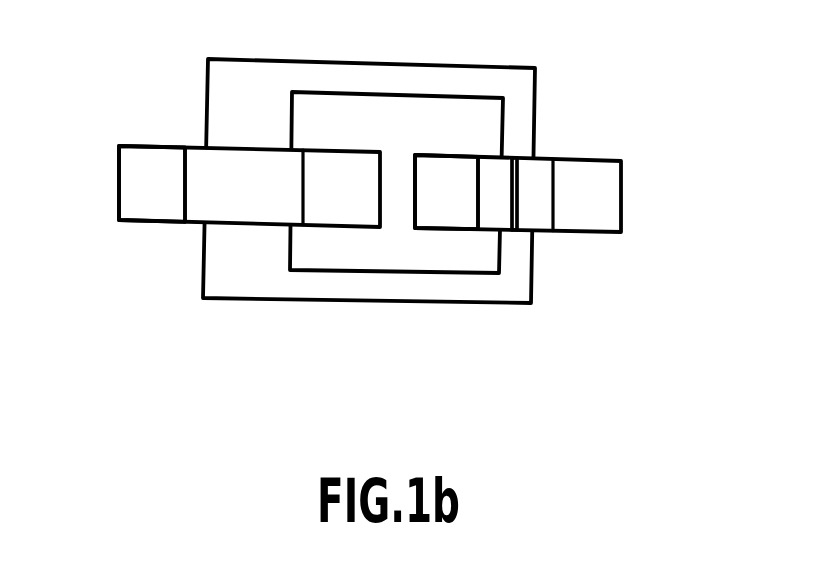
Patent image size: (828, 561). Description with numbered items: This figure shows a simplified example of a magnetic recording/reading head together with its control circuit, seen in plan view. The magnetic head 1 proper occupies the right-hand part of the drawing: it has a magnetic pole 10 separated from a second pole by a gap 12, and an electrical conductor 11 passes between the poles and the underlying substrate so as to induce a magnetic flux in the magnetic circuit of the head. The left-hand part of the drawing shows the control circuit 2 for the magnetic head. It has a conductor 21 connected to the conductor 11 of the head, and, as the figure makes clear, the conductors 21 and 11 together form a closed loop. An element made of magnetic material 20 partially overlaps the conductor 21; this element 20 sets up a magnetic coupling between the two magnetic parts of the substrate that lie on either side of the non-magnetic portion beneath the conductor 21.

The magnetic head 1 is at (638, 200).
The control circuit 2 is at (107, 189).
The magnetic pole 10 is at (441, 177).
The electrical conductor 11 is at (512, 260).
The gap 12 is at (519, 177).
The element made of magnetic material 20 is at (148, 163).
The conductor 21 is at (218, 245).